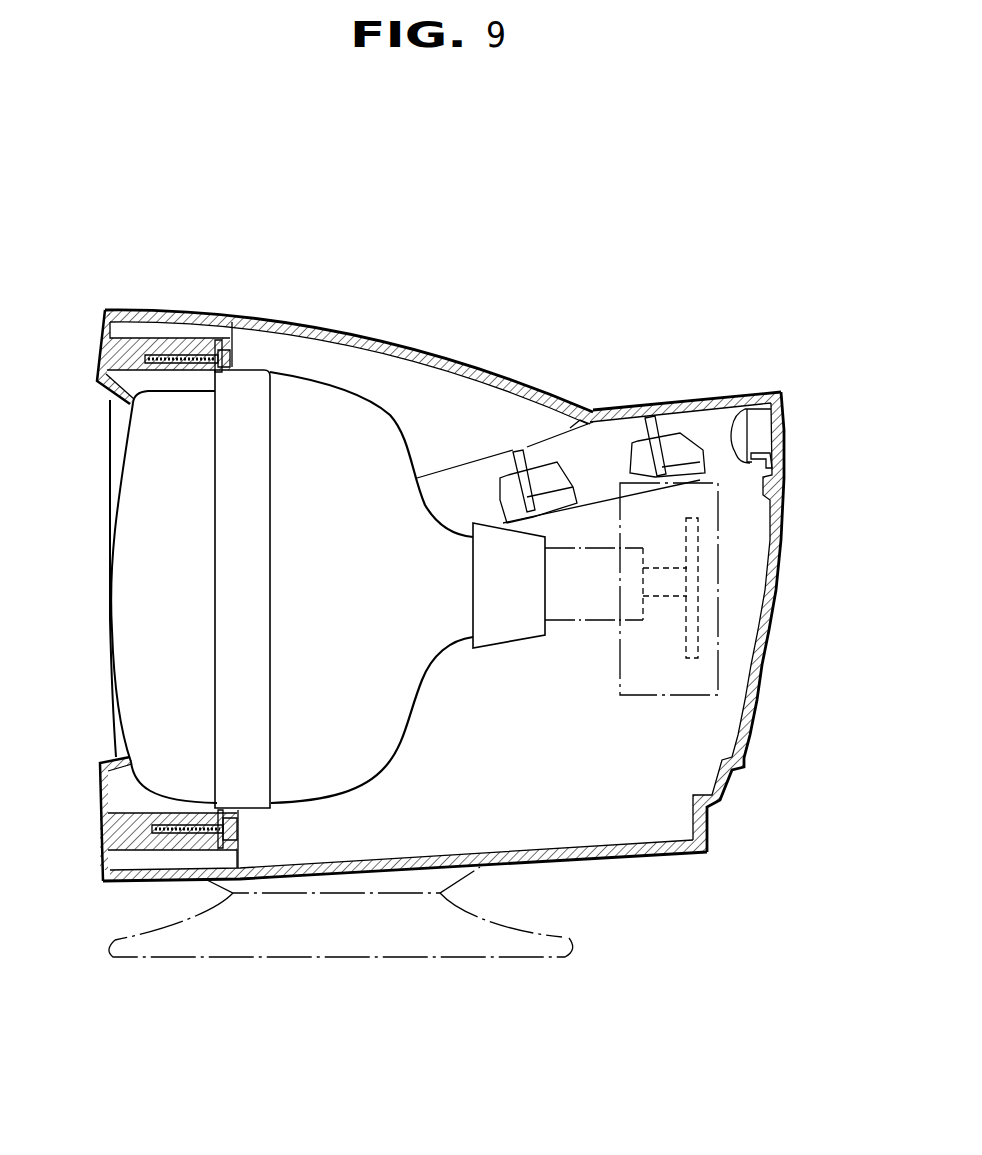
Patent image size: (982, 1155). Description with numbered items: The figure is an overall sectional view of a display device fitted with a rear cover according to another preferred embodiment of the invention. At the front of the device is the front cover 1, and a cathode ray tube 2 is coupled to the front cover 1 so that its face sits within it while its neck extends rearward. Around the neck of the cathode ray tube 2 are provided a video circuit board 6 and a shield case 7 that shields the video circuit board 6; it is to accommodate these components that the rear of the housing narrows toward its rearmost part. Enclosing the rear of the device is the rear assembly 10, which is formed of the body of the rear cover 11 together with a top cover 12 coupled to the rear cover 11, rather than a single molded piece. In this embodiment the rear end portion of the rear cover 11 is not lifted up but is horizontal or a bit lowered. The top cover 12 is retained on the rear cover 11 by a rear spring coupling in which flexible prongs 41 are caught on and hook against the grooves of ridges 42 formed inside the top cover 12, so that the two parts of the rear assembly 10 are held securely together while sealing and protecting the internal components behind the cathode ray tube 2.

The front cover 1 is at (165, 303).
The cathode ray tube 2 is at (157, 617).
The video circuit board 6 is at (692, 572).
The shield case 7 is at (683, 682).
The rear assembly 10 is at (388, 338).
The rear cover 11 is at (772, 616).
The top cover 12 is at (700, 390).
The flexible prongs 41 is at (744, 413).
The ridges 42 is at (765, 452).